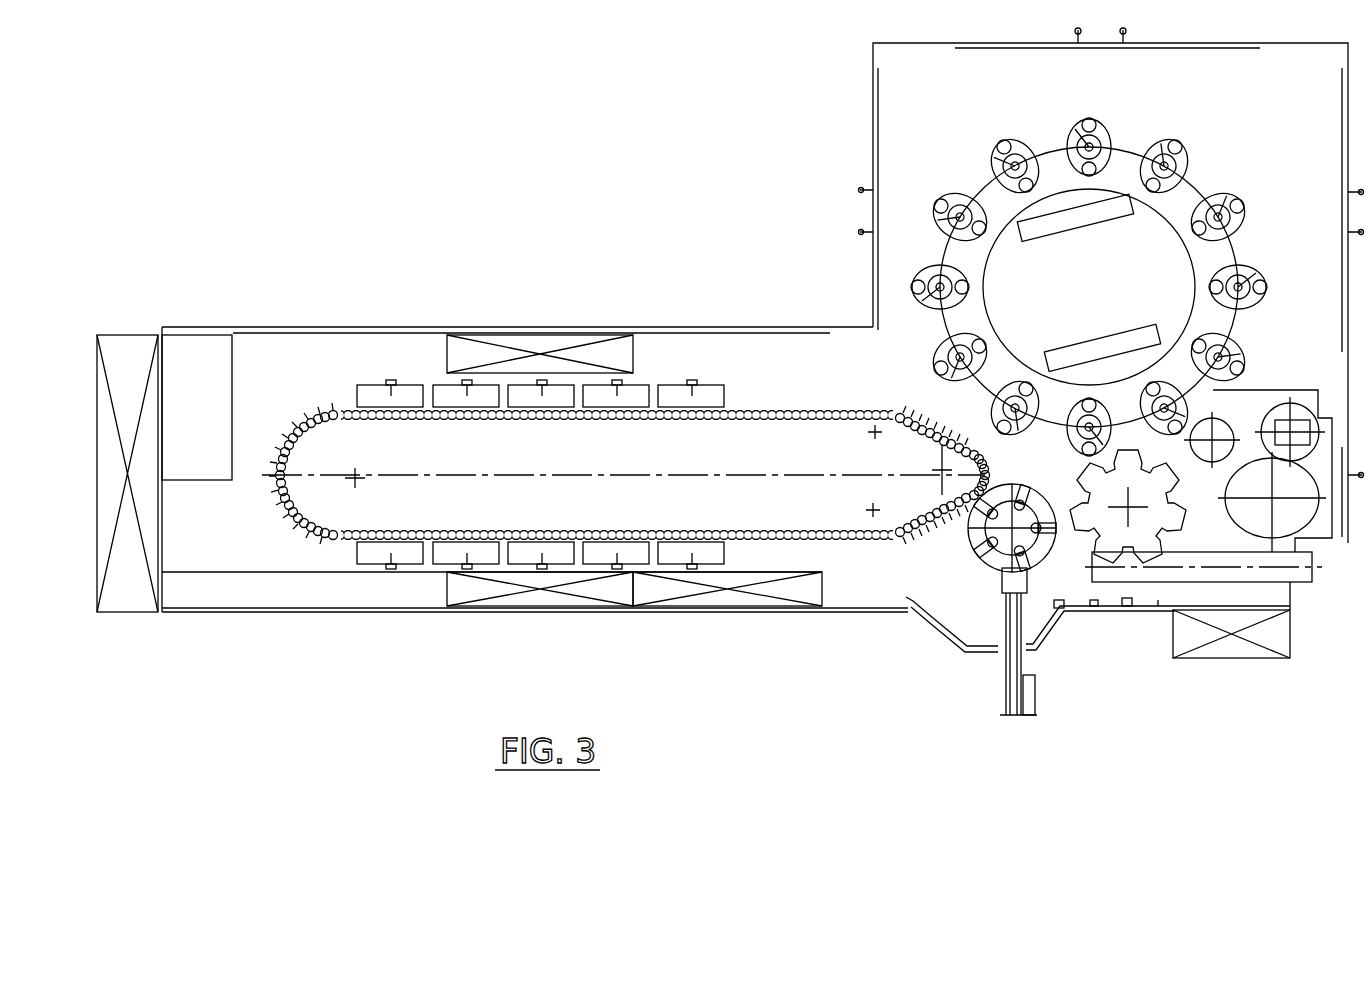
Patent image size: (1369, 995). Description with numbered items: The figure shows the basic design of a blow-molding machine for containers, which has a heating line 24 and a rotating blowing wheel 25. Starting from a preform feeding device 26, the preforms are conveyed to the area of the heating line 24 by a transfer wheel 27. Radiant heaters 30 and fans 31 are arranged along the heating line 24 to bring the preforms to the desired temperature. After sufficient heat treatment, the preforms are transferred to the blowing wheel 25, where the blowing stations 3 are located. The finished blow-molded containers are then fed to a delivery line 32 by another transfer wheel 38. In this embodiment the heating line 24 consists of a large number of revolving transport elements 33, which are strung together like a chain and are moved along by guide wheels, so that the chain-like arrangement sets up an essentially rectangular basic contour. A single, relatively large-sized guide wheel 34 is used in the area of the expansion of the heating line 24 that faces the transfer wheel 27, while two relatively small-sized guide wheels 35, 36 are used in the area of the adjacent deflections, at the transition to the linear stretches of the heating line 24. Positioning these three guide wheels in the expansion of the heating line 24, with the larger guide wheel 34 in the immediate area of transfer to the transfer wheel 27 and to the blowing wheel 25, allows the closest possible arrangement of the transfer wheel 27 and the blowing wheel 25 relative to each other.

The blowing stations 3 is at (927, 263).
The heating line 24 is at (678, 362).
The blowing wheel 25 is at (1010, 202).
The preform feeding device 26 is at (1027, 660).
The transfer wheel 27 is at (985, 550).
The radiant heaters 30 is at (408, 385).
The fans 31 is at (533, 342).
The delivery line 32 is at (1298, 580).
The transport elements 33 is at (320, 541).
The guide wheel 34 is at (355, 478).
The guide roller 35 is at (875, 432).
The guide wheels 36 is at (873, 510).
The transfer wheel 38 is at (1140, 520).